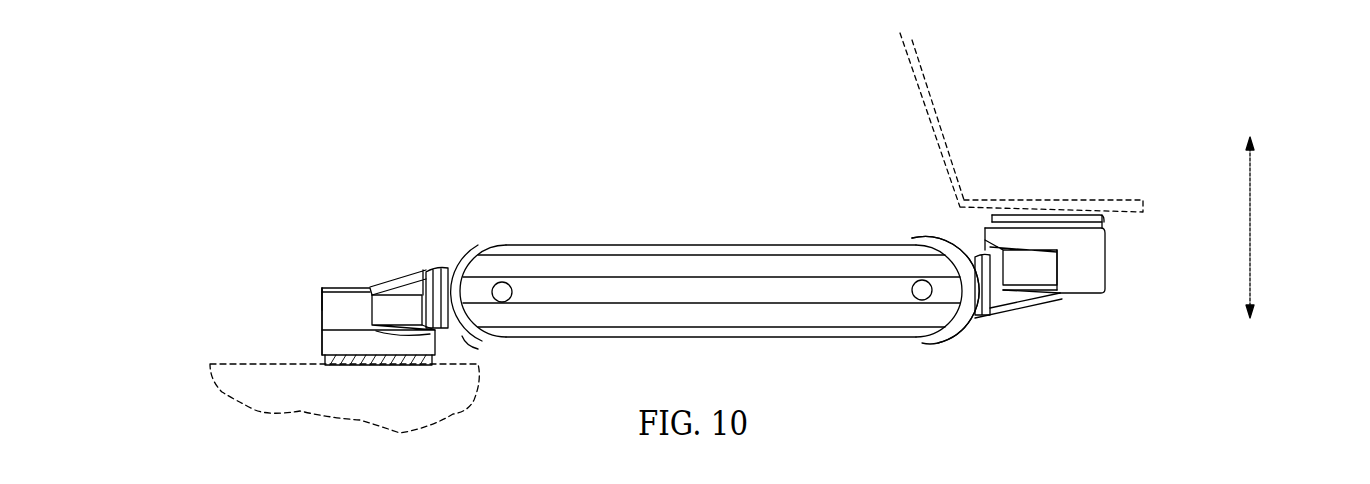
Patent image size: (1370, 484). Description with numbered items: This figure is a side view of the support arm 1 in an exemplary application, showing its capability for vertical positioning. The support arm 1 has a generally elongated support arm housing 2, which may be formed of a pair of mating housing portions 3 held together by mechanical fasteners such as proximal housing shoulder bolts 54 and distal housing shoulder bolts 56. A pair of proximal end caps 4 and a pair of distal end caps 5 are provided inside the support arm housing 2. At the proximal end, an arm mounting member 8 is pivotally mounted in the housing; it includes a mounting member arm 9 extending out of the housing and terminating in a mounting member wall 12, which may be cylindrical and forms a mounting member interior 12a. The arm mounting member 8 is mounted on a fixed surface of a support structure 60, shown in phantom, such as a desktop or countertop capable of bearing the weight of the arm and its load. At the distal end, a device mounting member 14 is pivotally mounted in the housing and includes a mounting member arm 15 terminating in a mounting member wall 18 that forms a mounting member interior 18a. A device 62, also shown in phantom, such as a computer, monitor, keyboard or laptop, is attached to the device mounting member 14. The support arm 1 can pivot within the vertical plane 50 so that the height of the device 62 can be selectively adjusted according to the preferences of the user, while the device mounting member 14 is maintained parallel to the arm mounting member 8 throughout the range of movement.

The support arm 1 is at (526, 182).
The support arm housing 2 is at (650, 218).
The housing portions 3 is at (754, 230).
The proximal end caps 4 is at (458, 252).
The distal end caps 5 is at (962, 320).
The arm mounting member 8 is at (306, 308).
The mounting member arm 9 is at (447, 262).
The mounting member wall 12 is at (320, 333).
The mounting member interior 12a is at (342, 292).
The device mounting member 14 is at (1122, 266).
The mounting member arm 15 is at (965, 268).
The mounting member wall 18 is at (1100, 280).
The mounting member interior 18a is at (1070, 276).
The vertical plane 50 is at (1250, 220).
The proximal housing shoulder bolts 54 is at (512, 292).
The distal housing shoulder bolts 56 is at (912, 290).
The support structure 60 is at (231, 356).
The device 62 is at (950, 82).